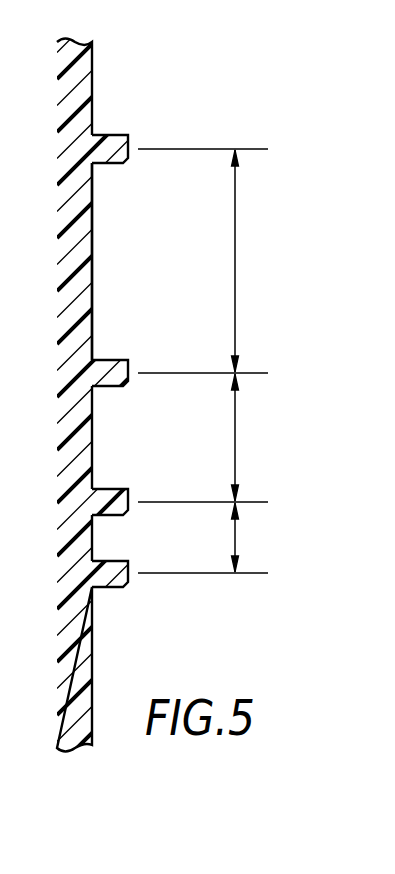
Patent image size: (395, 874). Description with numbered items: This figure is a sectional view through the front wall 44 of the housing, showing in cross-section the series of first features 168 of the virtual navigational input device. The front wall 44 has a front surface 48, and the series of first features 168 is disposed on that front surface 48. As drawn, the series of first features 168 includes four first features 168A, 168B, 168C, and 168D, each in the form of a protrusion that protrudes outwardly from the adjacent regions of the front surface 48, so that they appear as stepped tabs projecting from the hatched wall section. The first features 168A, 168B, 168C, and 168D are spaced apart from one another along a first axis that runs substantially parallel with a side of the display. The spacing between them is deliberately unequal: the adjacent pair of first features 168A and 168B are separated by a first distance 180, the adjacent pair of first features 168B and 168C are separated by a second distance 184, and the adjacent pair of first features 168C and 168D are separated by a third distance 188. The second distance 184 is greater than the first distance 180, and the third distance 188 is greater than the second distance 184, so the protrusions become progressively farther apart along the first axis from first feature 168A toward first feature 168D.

The front wall 44 is at (93, 62).
The front surface 48 is at (93, 98).
The series of first features 168 is at (121, 287).
The first feature 168A is at (108, 589).
The first feature 168B is at (108, 517).
The first feature 168C is at (108, 388).
The first feature 168D is at (108, 165).
The first distance 180 is at (235, 533).
The second distance 184 is at (235, 430).
The third distance 188 is at (235, 249).